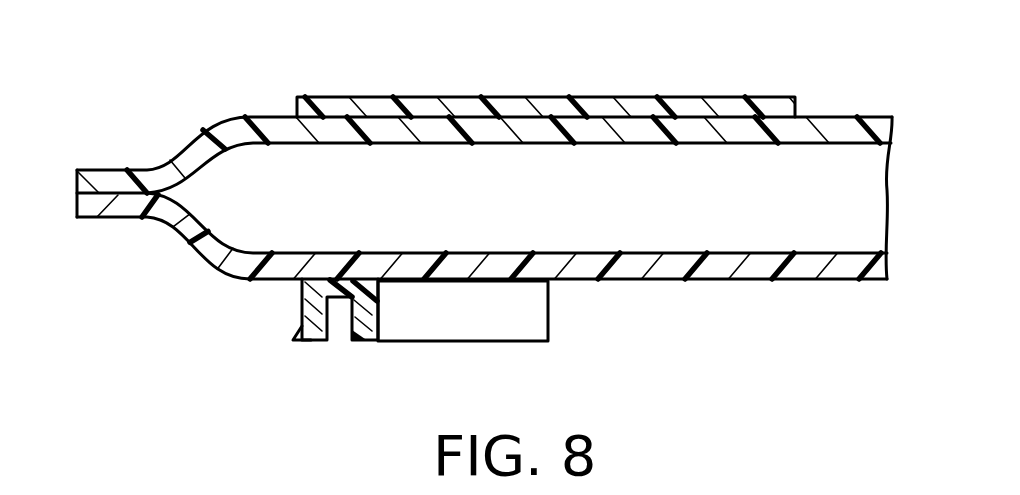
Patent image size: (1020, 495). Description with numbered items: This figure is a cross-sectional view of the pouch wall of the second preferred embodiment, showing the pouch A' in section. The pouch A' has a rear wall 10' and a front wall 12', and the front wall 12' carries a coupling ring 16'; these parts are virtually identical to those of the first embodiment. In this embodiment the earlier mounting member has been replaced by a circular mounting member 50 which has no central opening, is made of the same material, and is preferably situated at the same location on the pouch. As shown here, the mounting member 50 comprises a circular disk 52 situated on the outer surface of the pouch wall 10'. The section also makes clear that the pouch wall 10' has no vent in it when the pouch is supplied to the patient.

The pouch A' is at (478, 175).
The rear wall 10' is at (484, 133).
The front wall 12' is at (482, 246).
The coupling ring 16' is at (390, 313).
The circular mounting member 50 is at (781, 94).
The circular disk 52 is at (372, 96).